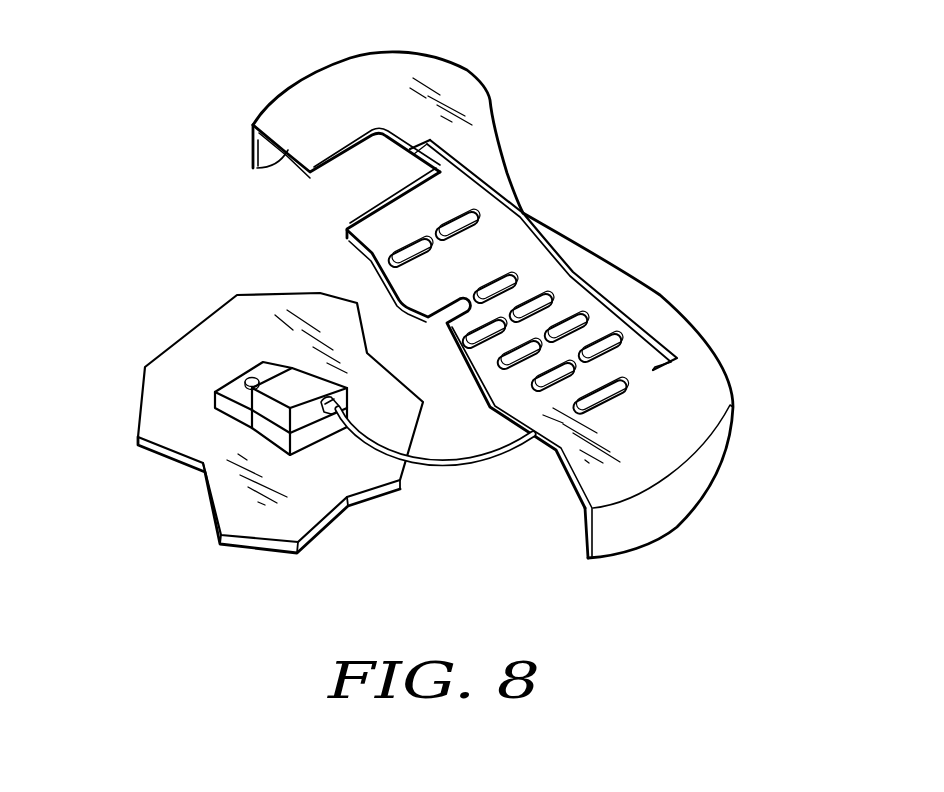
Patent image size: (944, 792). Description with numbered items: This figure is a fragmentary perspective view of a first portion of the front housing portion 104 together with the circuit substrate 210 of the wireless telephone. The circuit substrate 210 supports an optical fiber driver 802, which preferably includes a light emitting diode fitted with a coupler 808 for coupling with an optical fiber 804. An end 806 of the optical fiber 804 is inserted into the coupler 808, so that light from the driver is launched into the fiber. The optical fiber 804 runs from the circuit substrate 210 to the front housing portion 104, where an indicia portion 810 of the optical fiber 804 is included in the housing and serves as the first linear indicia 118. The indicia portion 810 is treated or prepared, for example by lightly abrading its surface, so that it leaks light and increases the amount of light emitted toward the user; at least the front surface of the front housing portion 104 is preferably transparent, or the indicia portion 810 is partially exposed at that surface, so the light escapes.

The front housing portion 104 is at (383, 62).
The indicia portion 810 is at (430, 139).
The first linear indicia 118 is at (525, 212).
The circuit substrate 210 is at (218, 330).
The optical fiber driver 802 is at (260, 430).
The optical fiber 804 is at (497, 460).
The end 806 is at (342, 413).
The coupler 808 is at (327, 412).